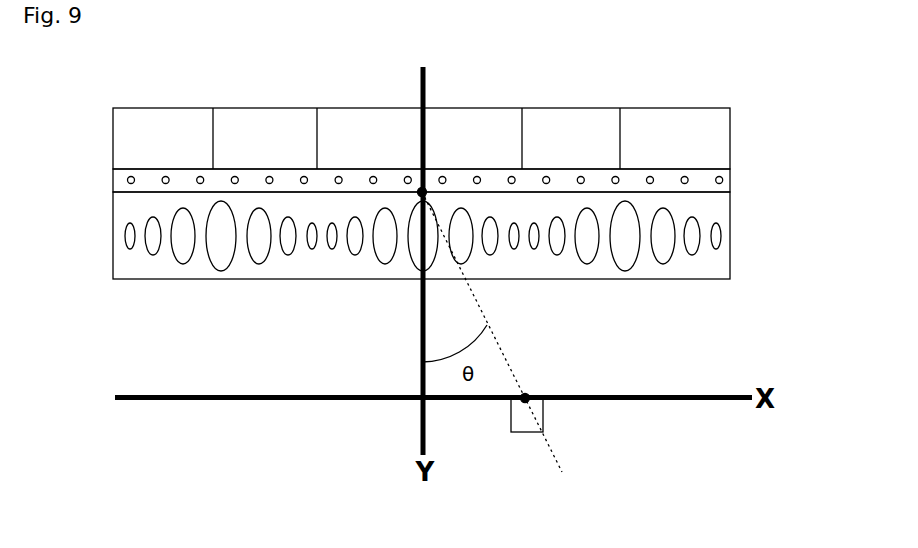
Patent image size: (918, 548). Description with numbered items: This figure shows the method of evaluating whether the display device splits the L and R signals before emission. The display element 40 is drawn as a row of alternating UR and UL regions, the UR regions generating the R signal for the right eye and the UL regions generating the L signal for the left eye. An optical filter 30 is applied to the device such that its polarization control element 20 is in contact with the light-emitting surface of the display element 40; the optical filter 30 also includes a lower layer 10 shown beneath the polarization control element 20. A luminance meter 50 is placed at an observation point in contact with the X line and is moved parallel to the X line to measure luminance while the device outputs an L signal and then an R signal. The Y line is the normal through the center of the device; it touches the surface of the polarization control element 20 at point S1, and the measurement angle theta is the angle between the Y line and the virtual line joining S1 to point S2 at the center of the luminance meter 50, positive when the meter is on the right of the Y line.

The optical sensor / light receiving element layer 10 is at (726, 214).
The polarization control element 20 is at (725, 187).
The optical filter 30 is at (469, 224).
The display element 40 is at (723, 131).
The luminance meter 50 is at (540, 410).
The point S1 is at (426, 188).
The point S2 is at (531, 394).